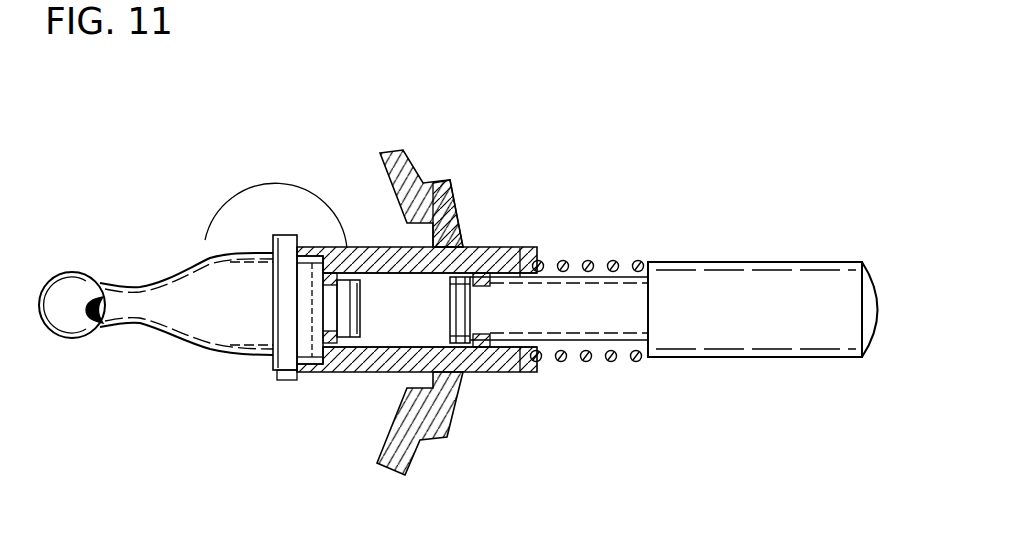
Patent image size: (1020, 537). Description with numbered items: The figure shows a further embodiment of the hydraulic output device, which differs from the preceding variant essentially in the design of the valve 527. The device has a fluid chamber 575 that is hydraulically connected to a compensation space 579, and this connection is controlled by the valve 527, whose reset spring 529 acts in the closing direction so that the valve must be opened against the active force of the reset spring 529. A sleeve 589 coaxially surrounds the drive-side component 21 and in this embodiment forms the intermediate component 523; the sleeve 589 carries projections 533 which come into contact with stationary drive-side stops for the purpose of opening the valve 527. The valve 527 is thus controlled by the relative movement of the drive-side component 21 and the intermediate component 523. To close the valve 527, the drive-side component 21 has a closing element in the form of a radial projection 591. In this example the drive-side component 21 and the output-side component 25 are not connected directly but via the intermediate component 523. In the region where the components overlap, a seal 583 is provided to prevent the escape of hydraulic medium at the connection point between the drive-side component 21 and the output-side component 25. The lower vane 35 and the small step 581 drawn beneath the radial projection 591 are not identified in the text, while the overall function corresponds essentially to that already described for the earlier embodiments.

The drive-side component 21 is at (213, 336).
The output-side component 25 is at (757, 282).
The lower vane 35 is at (413, 432).
The intermediate component 523 is at (439, 183).
The valve 527 is at (309, 231).
The reset spring 529 is at (594, 261).
The projections 533 is at (462, 222).
The fluid chamber 575 is at (382, 343).
The compensation space 579 is at (287, 200).
The step 581 is at (290, 388).
The seal 583 is at (484, 352).
The sleeve 589 is at (343, 377).
The radial projection 591 is at (281, 238).